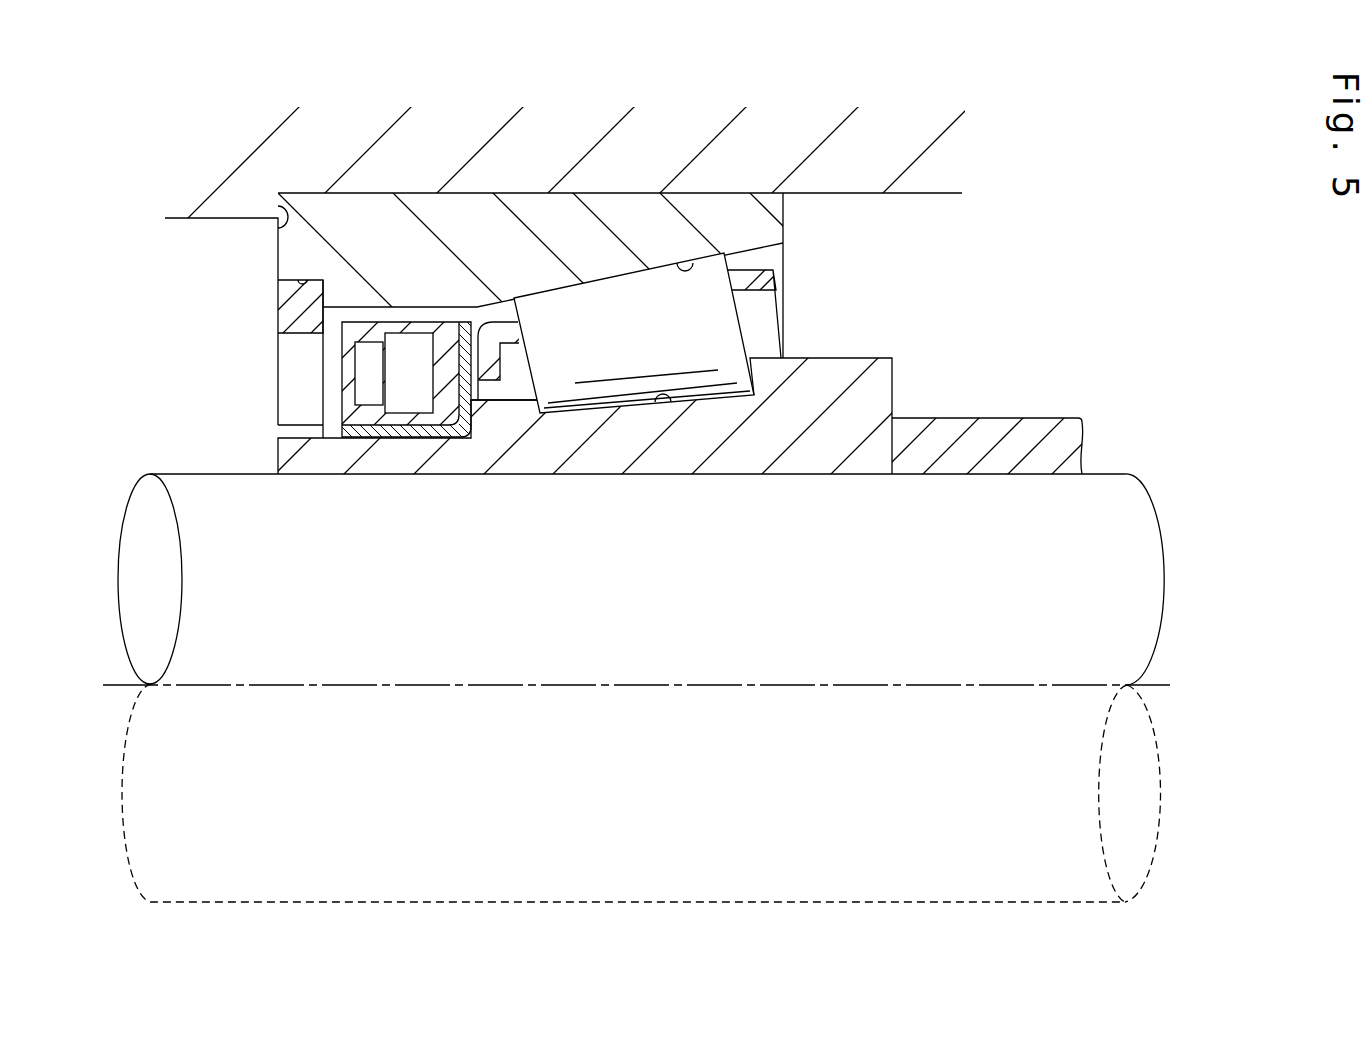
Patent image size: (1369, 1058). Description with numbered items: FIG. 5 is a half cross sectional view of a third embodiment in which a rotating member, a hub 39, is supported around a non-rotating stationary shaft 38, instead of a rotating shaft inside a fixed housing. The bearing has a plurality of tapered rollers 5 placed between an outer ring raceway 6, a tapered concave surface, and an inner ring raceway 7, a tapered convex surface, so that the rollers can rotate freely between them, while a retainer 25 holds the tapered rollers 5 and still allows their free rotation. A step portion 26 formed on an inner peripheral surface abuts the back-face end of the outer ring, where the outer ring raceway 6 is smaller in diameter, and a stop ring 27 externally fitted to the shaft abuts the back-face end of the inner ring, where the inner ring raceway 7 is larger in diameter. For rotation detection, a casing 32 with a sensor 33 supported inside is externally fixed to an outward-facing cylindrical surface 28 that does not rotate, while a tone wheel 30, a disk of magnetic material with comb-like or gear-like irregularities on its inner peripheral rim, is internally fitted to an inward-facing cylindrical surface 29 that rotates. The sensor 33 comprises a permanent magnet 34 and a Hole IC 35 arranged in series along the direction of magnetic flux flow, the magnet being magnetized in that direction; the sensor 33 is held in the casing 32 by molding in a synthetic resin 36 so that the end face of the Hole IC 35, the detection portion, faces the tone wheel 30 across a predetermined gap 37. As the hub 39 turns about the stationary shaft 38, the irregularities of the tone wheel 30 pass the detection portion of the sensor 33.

The tapered rollers 5 is at (720, 318).
The outer ring raceway 6 is at (683, 262).
The inner ring raceway 7 is at (678, 410).
The retainer 25 is at (757, 282).
The step portion 26 is at (277, 233).
The stop ring 27 is at (955, 432).
The outward-facing cylindrical surface 28 is at (415, 420).
The inward-facing cylindrical surface 29 is at (308, 280).
The tone wheel 30 is at (283, 323).
The casing 32 is at (452, 430).
The sensor 33 is at (425, 342).
The permanent magnet 34 is at (413, 340).
The Hole IC 35 is at (367, 353).
The synthetic resin 36 is at (366, 422).
The gap 37 is at (333, 420).
The stationary shaft 38 is at (1120, 613).
The hub 39 is at (658, 153).